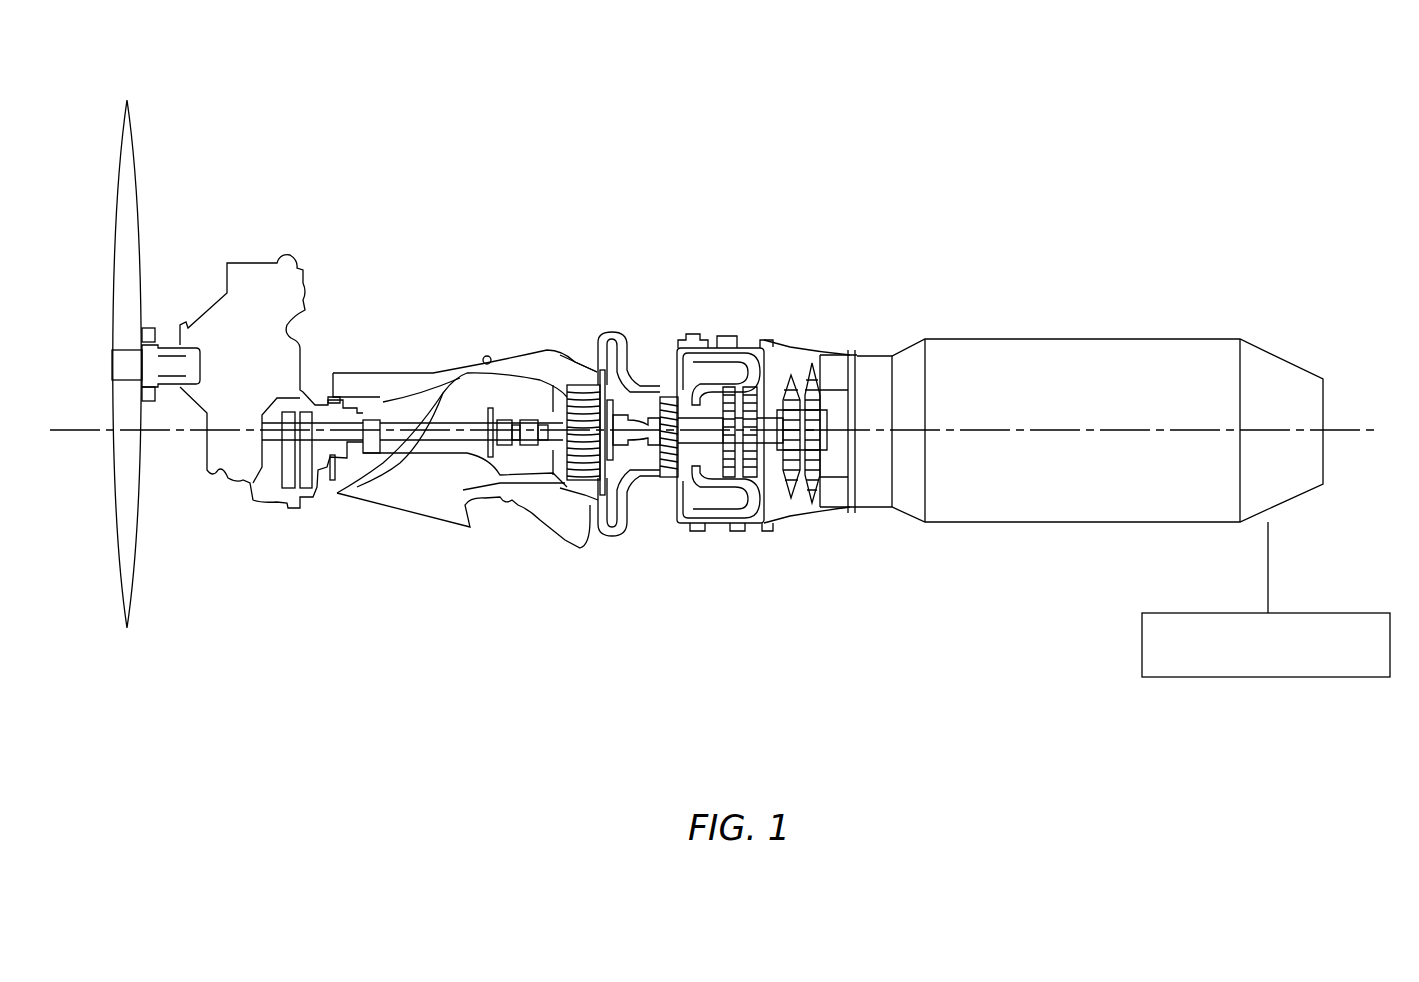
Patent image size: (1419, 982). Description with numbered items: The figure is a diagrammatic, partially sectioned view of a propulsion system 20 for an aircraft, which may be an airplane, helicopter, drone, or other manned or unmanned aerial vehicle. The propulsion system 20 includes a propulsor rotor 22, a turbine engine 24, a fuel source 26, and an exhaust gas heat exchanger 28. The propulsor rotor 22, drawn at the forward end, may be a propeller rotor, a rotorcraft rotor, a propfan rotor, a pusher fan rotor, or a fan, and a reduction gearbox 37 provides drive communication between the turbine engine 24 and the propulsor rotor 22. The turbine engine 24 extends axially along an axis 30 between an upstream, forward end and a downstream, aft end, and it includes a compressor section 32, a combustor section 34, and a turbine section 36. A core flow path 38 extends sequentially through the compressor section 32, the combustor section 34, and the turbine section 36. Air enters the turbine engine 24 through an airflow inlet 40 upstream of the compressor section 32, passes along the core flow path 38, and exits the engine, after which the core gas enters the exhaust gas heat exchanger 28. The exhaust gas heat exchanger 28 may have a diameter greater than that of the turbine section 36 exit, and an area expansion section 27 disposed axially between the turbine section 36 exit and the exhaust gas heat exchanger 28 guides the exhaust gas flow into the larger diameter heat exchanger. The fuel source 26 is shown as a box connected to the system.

The propulsion system 20 is at (967, 88).
The propulsor rotor 22 is at (186, 99).
The turbine engine 24 is at (567, 190).
The fuel source 26 is at (1345, 613).
The area expansion section 27 is at (908, 515).
The exhaust gas heat exchanger 28 is at (1128, 245).
The axis 30 is at (1357, 430).
The compressor section 32 is at (613, 298).
The combustor section 34 is at (714, 540).
The turbine section 36 is at (803, 338).
The reduction gearbox 37 is at (274, 512).
The core flow path 38 is at (832, 492).
The airflow inlet 40 is at (400, 520).